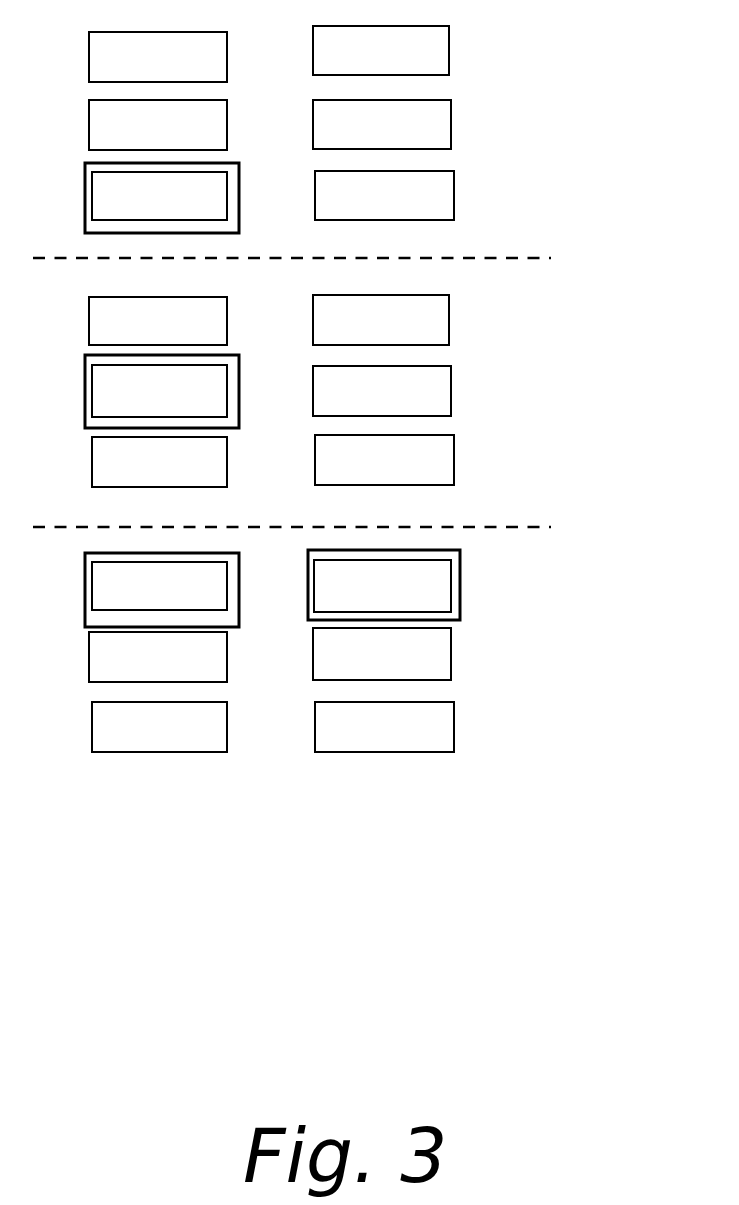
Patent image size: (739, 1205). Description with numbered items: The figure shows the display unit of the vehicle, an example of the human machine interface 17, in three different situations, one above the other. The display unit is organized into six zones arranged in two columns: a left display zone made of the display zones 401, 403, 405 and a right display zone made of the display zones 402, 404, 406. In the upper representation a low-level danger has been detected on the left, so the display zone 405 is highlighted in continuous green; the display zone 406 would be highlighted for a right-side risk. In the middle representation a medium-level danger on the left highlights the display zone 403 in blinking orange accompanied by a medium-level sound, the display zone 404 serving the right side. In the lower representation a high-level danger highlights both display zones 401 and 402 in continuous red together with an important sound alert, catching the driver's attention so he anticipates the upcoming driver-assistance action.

The human machine interface 17 is at (543, 130).
The display zone 401 is at (162, 329).
The display zone 402 is at (384, 323).
The display zone 403 is at (162, 391).
The display zone 404 is at (382, 390).
The display zone 405 is at (162, 457).
The display zone 406 is at (384, 461).